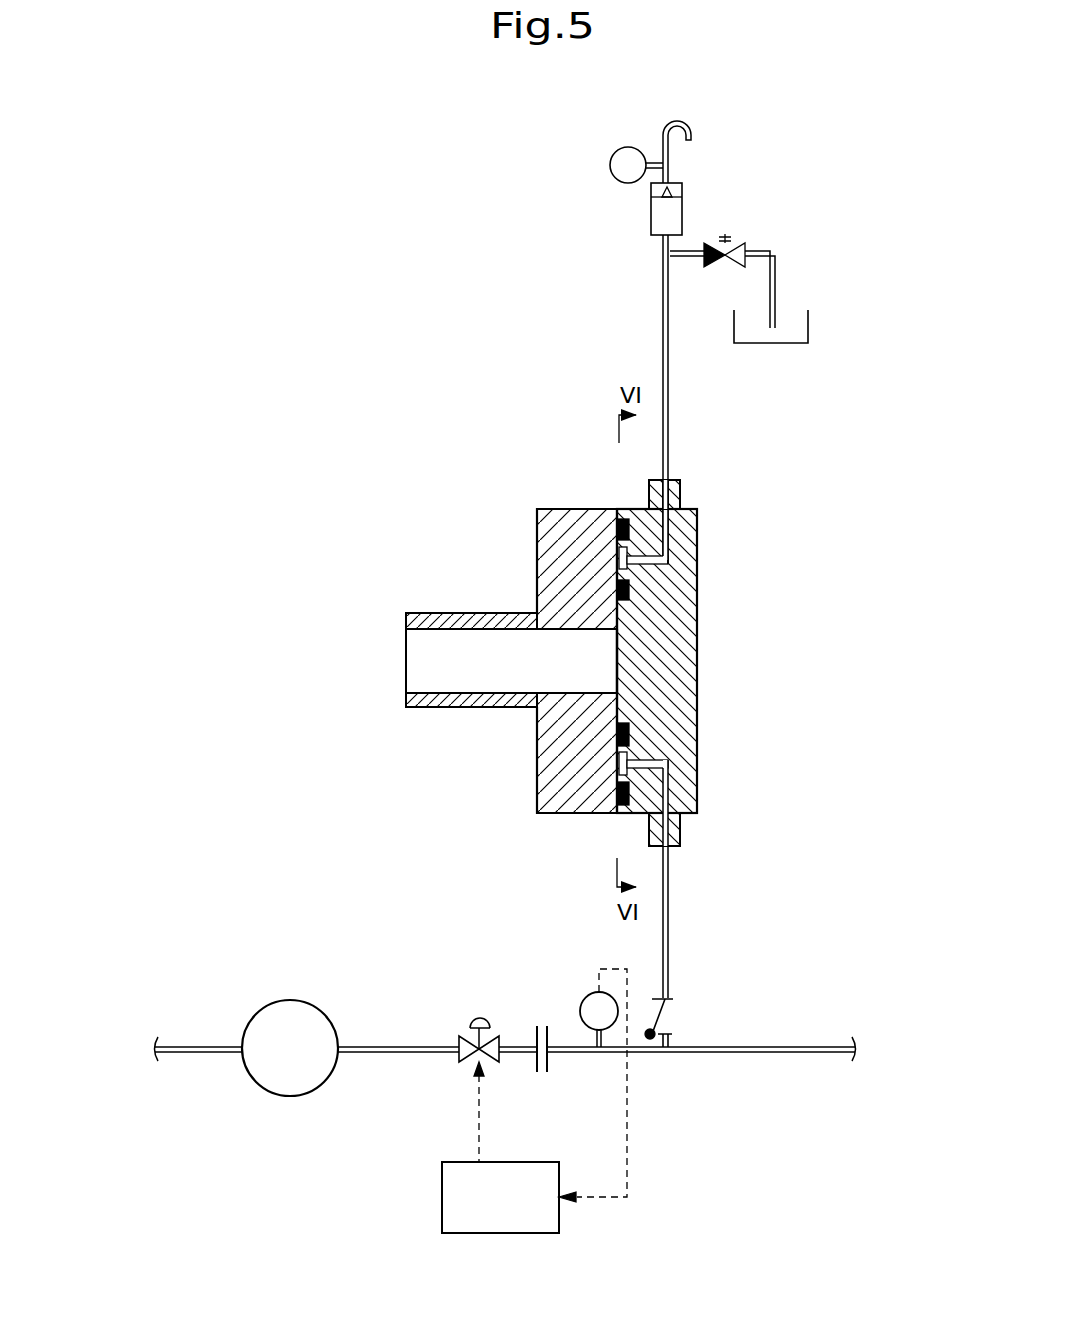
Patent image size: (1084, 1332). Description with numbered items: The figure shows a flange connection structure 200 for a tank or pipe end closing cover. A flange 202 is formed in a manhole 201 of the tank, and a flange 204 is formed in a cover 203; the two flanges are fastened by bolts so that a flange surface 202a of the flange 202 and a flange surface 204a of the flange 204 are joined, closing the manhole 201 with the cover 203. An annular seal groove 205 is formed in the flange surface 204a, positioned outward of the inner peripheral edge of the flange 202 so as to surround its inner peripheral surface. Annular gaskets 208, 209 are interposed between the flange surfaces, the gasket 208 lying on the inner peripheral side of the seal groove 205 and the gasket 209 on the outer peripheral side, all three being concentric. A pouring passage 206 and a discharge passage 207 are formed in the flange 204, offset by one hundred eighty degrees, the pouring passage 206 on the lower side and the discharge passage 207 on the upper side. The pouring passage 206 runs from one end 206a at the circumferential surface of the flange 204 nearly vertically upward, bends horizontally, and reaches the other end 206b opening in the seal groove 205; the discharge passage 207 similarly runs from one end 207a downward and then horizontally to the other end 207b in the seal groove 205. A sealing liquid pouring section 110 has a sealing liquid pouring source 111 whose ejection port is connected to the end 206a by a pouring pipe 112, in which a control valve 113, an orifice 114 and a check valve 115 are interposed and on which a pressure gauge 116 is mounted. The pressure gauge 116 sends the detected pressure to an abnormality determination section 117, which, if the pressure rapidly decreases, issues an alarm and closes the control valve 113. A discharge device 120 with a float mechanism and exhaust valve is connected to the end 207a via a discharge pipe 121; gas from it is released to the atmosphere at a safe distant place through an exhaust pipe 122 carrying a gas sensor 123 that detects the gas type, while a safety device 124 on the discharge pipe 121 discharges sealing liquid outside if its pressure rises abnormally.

The sealing liquid pouring section 110 is at (262, 1147).
The sealing liquid pouring source 111 is at (278, 1018).
The pouring pipe 112 is at (670, 965).
The control valve 113 is at (460, 1058).
The orifice 114 is at (541, 1072).
The check valve 115 is at (672, 1020).
The pressure gauge 116 is at (589, 995).
The abnormality determination section 117 is at (478, 1233).
The discharge device 120 is at (651, 214).
The discharge pipe 121 is at (672, 359).
The exhaust pipe 122 is at (662, 131).
The gas sensor 123 is at (610, 165).
The safety device 124 is at (745, 248).
The flange connection structure 200 is at (288, 458).
The manhole 201 is at (430, 707).
The flange 202 is at (548, 814).
The flange surface 202a is at (619, 642).
The cover 203 is at (683, 655).
The flange 204 is at (692, 790).
The flange surface 204a is at (625, 690).
The seal groove 205 is at (621, 557).
The pouring passage 206 is at (681, 818).
The one end of pouring passage 206a is at (670, 848).
The other end of pouring passage 206b is at (640, 761).
The discharge passage 207 is at (672, 527).
The one end of discharge passage 207a is at (670, 481).
The other end of discharge passage 207b is at (640, 565).
The gasket 208 is at (618, 582).
The gasket 209 is at (617, 527).